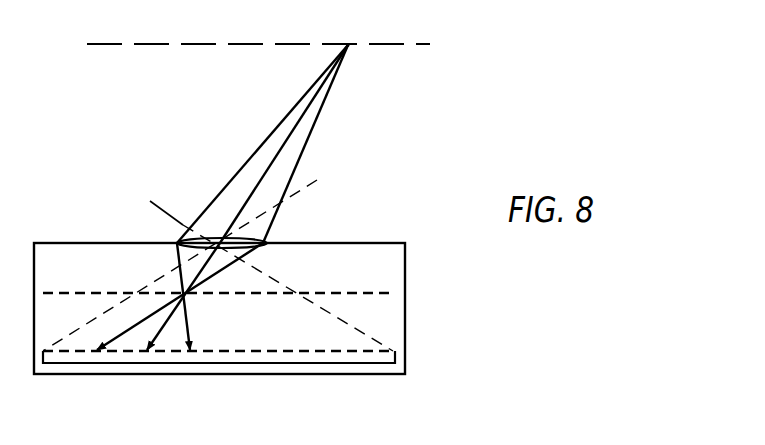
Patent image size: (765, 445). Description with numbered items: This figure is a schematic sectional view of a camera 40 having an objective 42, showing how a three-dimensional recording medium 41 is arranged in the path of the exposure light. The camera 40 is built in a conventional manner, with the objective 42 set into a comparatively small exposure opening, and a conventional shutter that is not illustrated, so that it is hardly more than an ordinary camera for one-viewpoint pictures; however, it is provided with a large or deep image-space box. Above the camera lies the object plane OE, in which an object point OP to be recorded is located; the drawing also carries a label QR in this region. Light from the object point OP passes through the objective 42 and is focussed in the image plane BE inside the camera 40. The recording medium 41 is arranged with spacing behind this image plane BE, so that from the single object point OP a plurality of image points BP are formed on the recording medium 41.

The camera 40 is at (413, 338).
The 3D recording medium 41 is at (292, 361).
The objective 42 is at (268, 243).
The object plane OE is at (141, 44).
The object point OP is at (348, 44).
The source region QR is at (124, 142).
The image plane BE is at (336, 293).
The image points BP is at (195, 357).